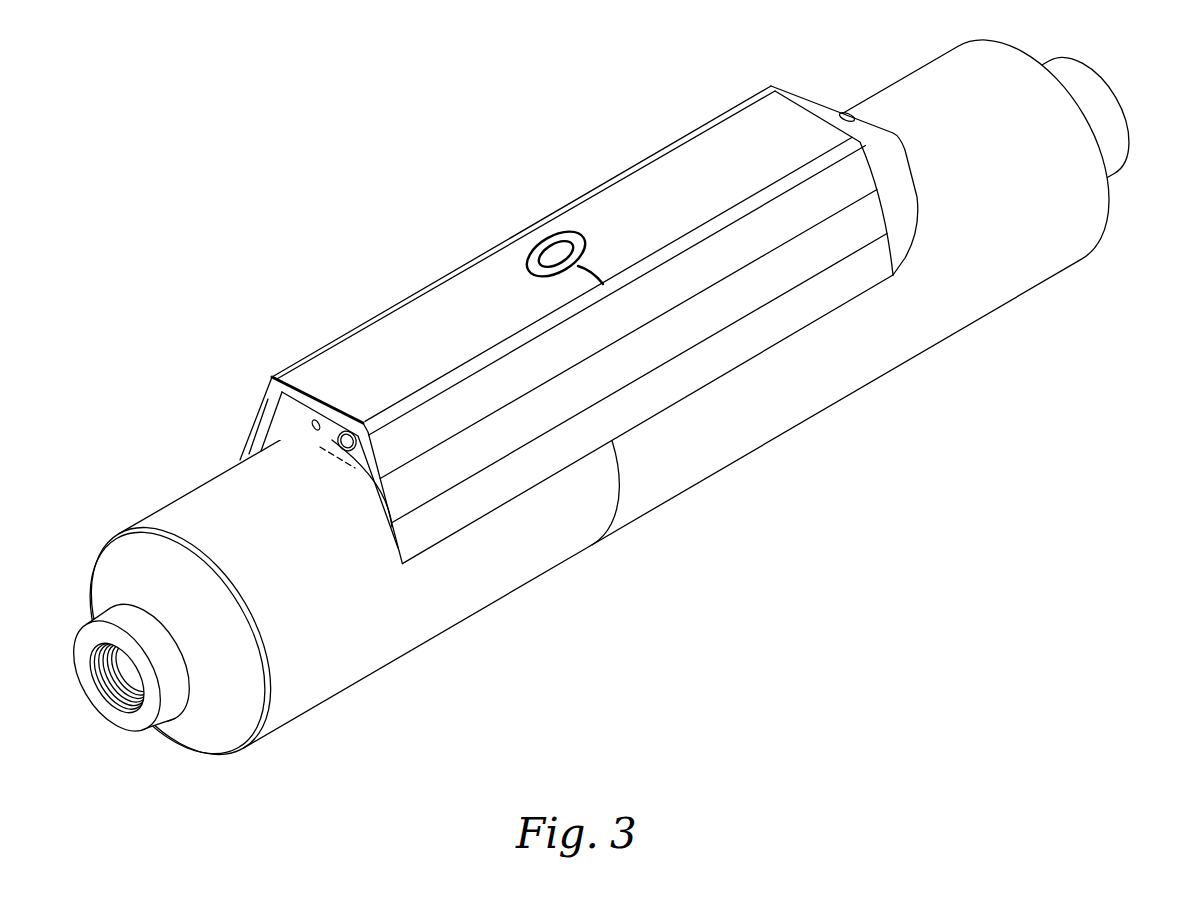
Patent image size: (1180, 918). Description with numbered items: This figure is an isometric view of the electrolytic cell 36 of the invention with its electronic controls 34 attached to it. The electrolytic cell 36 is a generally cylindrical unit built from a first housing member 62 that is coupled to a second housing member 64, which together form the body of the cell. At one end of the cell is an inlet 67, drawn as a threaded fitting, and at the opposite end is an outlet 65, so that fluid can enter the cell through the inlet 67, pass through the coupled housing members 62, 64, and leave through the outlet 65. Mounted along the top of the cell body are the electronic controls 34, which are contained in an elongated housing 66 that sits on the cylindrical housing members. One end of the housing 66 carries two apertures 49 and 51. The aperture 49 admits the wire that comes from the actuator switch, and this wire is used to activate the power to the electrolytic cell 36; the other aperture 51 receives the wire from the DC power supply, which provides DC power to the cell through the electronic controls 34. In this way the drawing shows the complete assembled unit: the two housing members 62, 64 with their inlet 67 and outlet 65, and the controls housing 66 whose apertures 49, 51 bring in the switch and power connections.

The electrolytic cell 36 is at (395, 137).
The electronic controls 34 is at (641, 150).
The housing 66 is at (287, 427).
The aperture 49 is at (311, 422).
The aperture 51 is at (336, 440).
The first housing member 62 is at (337, 672).
The second housing member 64 is at (962, 312).
The outlet 65 is at (1112, 102).
The inlet 67 is at (136, 728).